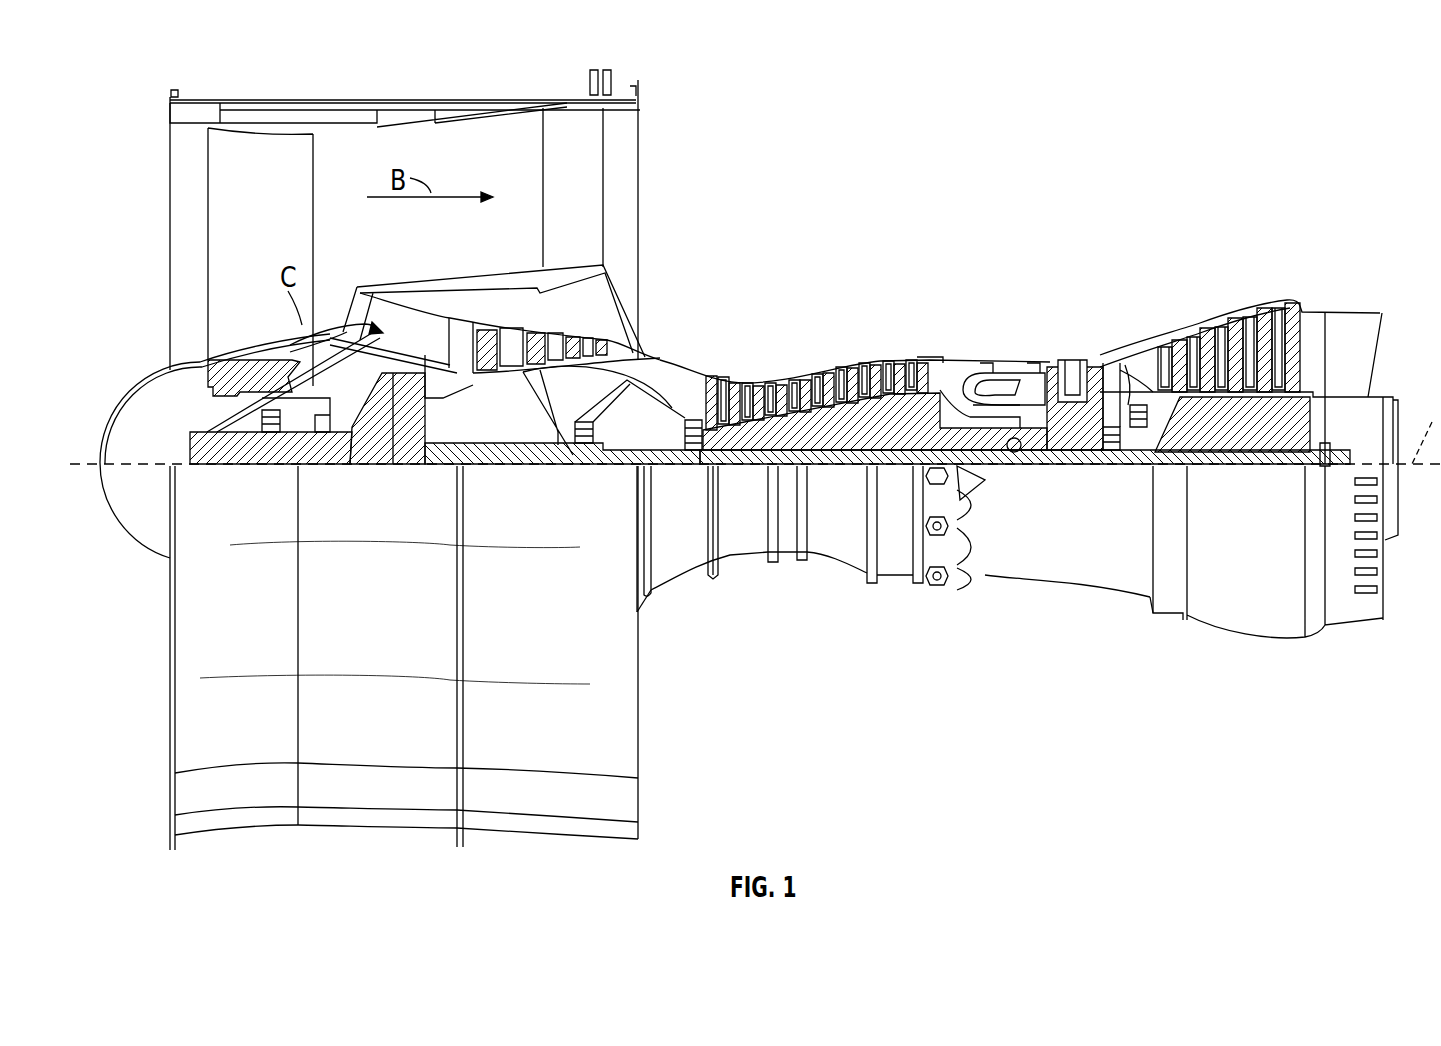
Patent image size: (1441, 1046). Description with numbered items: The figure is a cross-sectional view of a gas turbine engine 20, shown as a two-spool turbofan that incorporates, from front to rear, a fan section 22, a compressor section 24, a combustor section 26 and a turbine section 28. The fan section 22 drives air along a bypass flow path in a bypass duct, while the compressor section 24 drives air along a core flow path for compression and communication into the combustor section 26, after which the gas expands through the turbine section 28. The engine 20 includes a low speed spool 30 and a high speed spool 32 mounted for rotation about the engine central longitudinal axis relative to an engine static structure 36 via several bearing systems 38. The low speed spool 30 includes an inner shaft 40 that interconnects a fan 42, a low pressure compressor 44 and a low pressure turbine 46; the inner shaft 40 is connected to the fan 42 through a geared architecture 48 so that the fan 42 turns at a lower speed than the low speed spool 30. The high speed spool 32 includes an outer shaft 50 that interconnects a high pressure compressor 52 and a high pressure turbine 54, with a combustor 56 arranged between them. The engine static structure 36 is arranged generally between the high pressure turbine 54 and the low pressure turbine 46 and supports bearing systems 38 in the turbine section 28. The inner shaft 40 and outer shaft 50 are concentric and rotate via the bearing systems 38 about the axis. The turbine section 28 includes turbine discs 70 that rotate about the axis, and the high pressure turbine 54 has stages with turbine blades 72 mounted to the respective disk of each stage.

The gas turbine engine 20 is at (1142, 146).
The fan section 22 is at (447, 88).
The compressor section 24 is at (967, 222).
The combustor section 26 is at (1040, 222).
The turbine section 28 is at (1323, 225).
The low speed spool 30 is at (851, 468).
The high speed spool 32 is at (903, 423).
The engine static structure 36 is at (892, 584).
The bearing systems 38 is at (270, 432).
The inner shaft 40 is at (652, 466).
The fan 42 is at (287, 228).
The low pressure compressor 44 is at (550, 335).
The low pressure turbine 46 is at (1323, 299).
The geared architecture 48 is at (407, 432).
The outer shaft 50 is at (1018, 452).
The high pressure compressor 52 is at (817, 430).
The high pressure turbine 54 is at (1095, 346).
The combustor 56 is at (1010, 387).
The turbine discs 70 is at (1070, 450).
The turbine blades 72 is at (1050, 373).